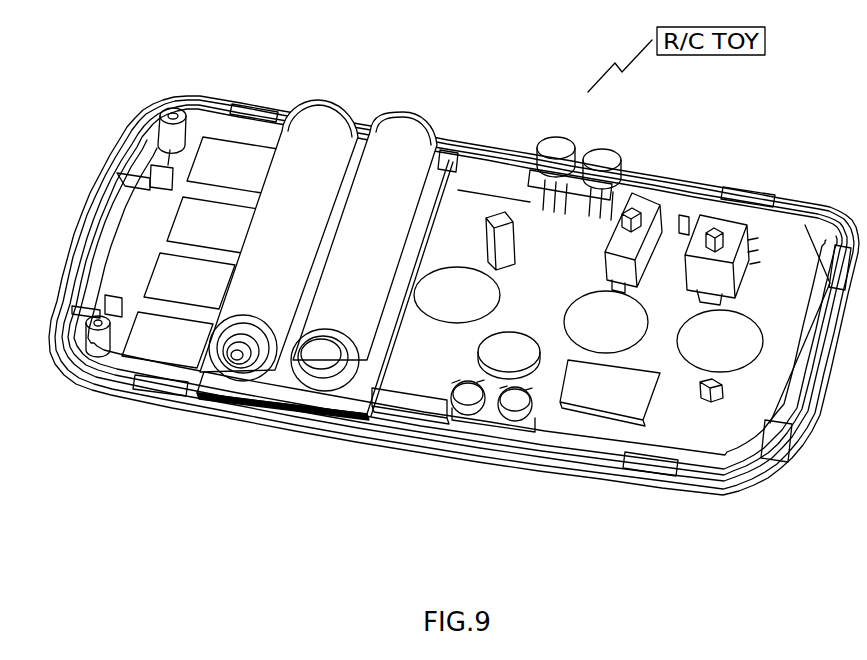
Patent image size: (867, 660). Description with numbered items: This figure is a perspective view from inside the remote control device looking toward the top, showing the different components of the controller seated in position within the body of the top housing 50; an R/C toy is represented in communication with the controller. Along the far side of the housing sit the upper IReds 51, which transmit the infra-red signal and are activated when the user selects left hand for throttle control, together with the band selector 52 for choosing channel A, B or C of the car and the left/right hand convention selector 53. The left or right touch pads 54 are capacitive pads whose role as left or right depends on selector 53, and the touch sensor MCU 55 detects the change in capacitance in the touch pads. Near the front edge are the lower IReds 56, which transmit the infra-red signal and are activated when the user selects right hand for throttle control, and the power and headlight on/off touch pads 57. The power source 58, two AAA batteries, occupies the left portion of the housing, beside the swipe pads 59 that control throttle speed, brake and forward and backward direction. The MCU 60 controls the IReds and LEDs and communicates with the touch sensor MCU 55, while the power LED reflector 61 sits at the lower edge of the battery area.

The top housing 50 is at (788, 455).
The upper IReds 51 is at (605, 150).
The band selector 52 is at (650, 202).
The left/right hand convention selector 53 is at (733, 228).
The left or right touch pads 54 is at (708, 347).
The touch sensor MCU 55 is at (592, 387).
The lower IReds 56 is at (511, 418).
The power and headlight on/off touch pads 57 is at (457, 307).
The power source 58 is at (333, 332).
The swipe pads 59 is at (147, 343).
The MCU 60 is at (508, 347).
The power LED reflector 61 is at (392, 402).